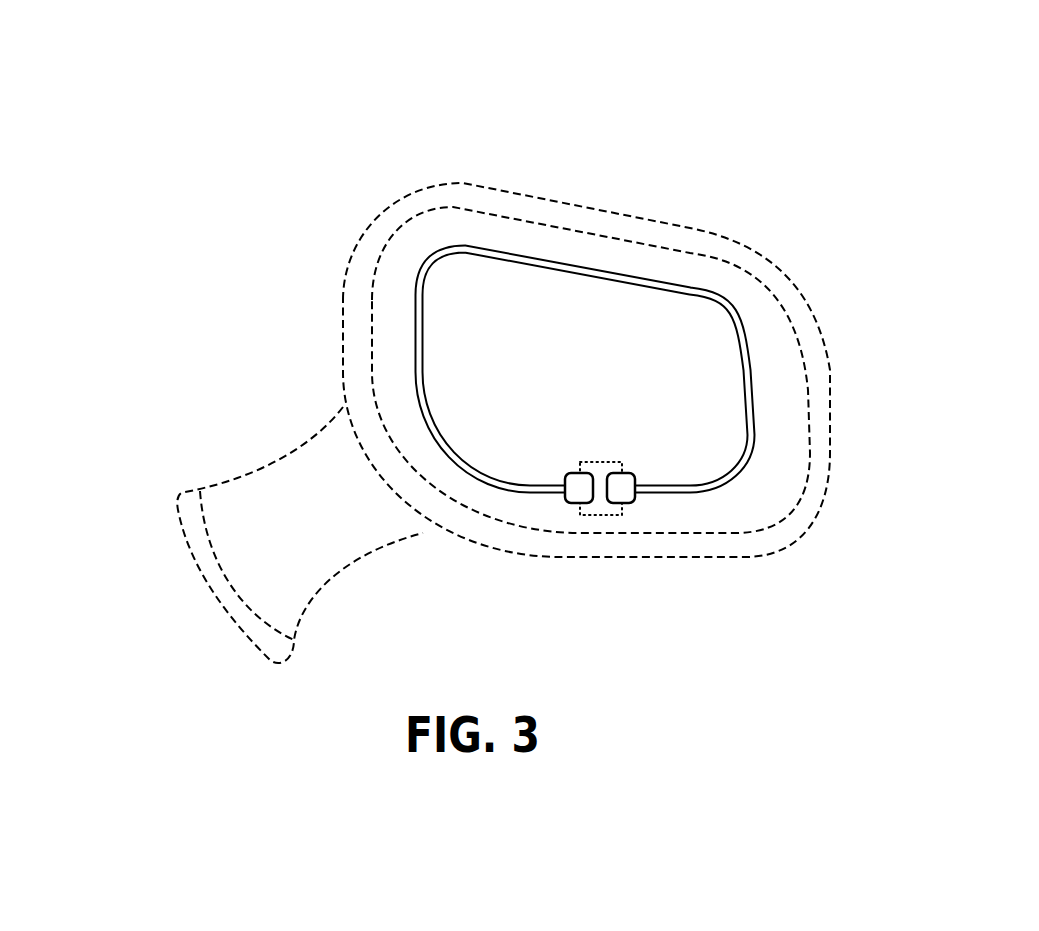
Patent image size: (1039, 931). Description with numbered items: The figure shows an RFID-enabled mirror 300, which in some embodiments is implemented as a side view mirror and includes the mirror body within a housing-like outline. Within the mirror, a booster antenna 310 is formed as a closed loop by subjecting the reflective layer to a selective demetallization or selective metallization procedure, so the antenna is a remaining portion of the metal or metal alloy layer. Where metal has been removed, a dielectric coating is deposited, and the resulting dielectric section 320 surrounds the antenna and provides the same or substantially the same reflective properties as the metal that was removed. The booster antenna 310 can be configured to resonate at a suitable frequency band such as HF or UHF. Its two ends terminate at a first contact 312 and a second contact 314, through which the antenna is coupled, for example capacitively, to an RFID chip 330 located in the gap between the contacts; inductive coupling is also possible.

The RFID-enabled mirror 300 is at (594, 382).
The booster antenna 310 is at (740, 477).
The first contact 312 is at (590, 503).
The second contact 314 is at (632, 503).
The dielectric section 320 is at (768, 352).
The RFID chip 330 is at (605, 472).